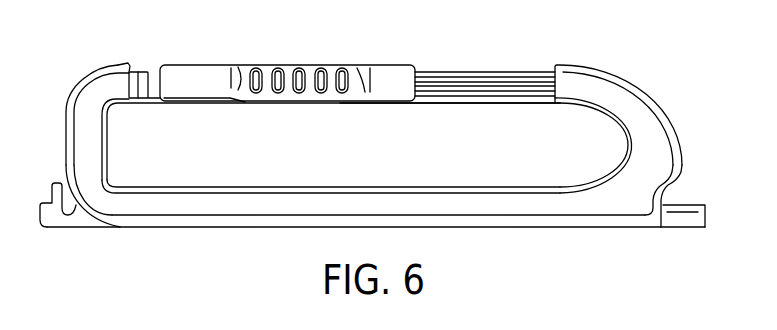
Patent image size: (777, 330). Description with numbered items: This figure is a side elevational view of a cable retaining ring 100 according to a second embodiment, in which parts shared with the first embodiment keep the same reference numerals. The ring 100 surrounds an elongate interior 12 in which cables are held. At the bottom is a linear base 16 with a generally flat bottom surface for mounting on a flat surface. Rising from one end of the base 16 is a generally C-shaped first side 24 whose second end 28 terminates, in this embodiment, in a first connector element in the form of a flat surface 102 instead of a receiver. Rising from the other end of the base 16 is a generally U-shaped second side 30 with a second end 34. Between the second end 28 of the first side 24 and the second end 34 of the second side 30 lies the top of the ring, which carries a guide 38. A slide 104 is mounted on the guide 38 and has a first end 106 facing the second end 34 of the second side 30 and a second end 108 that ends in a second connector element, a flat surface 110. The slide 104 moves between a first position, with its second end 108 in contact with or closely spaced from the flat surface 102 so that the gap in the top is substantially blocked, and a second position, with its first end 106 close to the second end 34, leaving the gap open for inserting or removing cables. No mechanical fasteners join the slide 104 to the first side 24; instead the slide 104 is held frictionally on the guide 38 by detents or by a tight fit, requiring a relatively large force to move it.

The cable retaining ring 100 is at (617, 258).
The elongate interior 12 is at (470, 165).
The base 16 is at (282, 205).
The first side 24 is at (82, 148).
The second end of first side 28 is at (115, 65).
The second side 30 is at (655, 147).
The second end of second side 34 is at (583, 73).
The guide 38 is at (525, 82).
The flat surface 102 is at (148, 73).
The slide 104 is at (247, 79).
The first end of slide 106 is at (405, 72).
The second end of slide 108 is at (187, 70).
The flat surface 110 is at (160, 85).